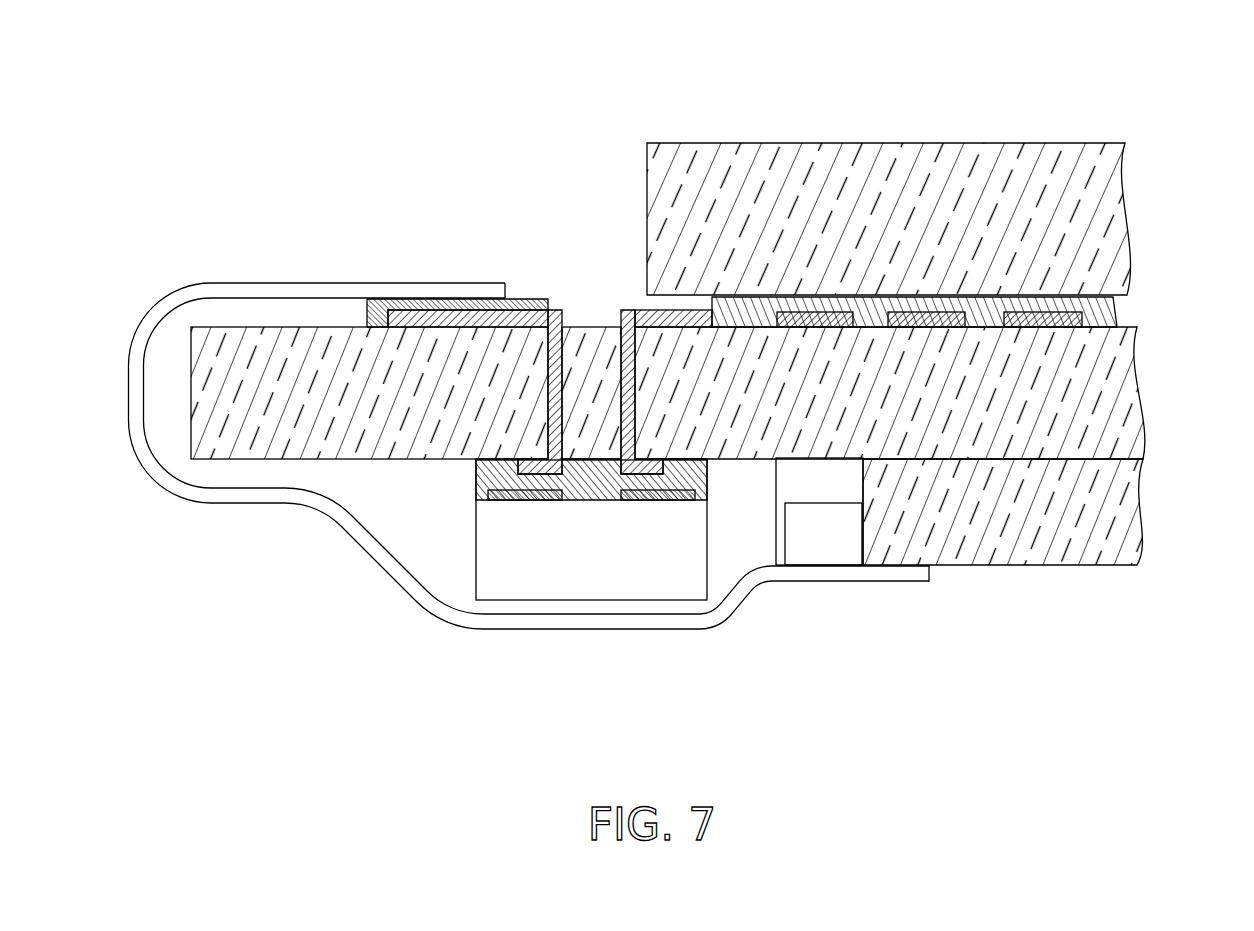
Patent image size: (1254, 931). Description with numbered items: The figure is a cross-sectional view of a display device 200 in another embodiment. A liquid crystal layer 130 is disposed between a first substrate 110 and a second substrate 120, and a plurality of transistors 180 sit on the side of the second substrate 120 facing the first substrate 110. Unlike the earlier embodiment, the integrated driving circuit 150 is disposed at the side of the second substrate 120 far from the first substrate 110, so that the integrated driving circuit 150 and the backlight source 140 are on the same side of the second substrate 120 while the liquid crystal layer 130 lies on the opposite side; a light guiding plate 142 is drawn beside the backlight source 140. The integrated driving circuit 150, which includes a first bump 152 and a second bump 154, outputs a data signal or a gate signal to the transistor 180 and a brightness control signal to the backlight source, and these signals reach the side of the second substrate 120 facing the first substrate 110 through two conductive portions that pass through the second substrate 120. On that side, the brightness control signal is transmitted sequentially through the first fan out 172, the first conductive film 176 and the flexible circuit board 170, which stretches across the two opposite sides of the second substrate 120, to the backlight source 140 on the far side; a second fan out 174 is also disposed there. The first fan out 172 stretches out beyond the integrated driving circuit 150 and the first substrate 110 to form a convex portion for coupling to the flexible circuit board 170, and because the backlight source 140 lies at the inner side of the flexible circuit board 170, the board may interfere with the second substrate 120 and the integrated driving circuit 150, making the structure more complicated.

The display device 200 is at (292, 65).
The first substrate 110 is at (982, 165).
The second substrate 120 is at (1115, 407).
The liquid crystal layer 130 is at (1097, 313).
The backlight source 140 is at (823, 543).
The light guiding plate 142 is at (1035, 535).
The integrated driving circuit 150 is at (593, 568).
The first bump 152 is at (657, 500).
The second bump 154 is at (527, 500).
The flexible circuit board 170 is at (268, 495).
The first fan out 172 is at (417, 318).
The second fan out 174 is at (678, 318).
The first conductive film 176 is at (363, 313).
The transistor 180 is at (1042, 327).